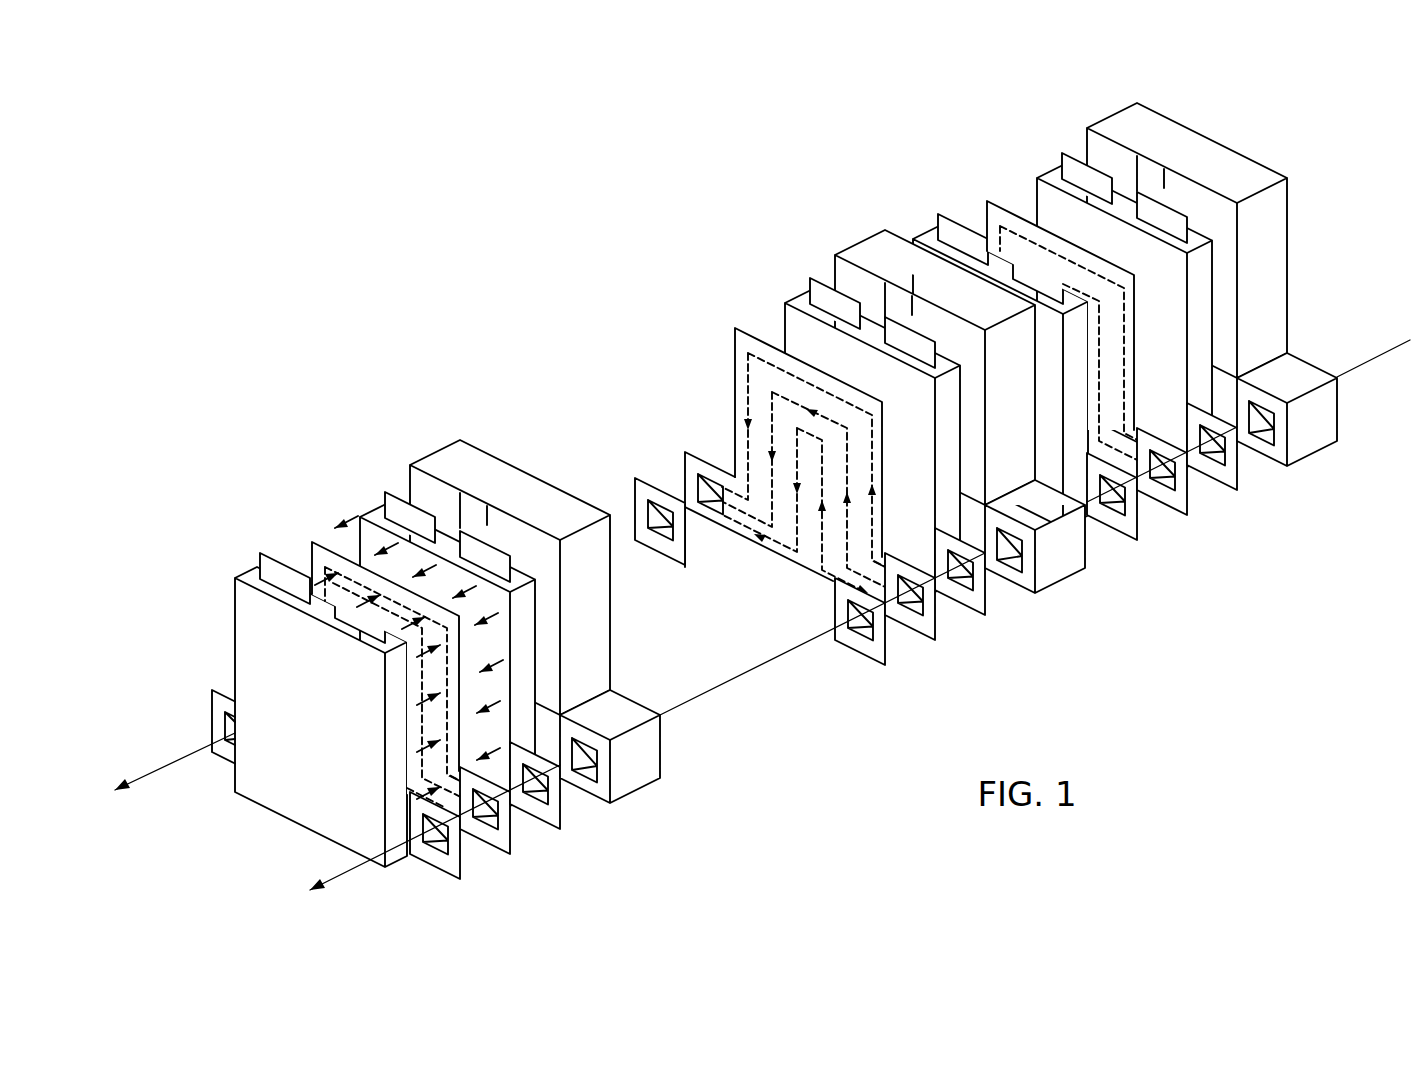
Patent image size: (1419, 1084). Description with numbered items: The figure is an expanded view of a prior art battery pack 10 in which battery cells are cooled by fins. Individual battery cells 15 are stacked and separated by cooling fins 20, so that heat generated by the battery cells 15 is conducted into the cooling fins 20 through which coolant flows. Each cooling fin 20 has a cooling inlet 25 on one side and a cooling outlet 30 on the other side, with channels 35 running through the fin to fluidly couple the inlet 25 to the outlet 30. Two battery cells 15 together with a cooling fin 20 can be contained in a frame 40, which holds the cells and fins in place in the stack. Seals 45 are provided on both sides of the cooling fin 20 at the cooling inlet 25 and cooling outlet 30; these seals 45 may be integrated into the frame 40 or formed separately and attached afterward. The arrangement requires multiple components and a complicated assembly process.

The battery pack 10 is at (595, 314).
The battery cell 15 is at (395, 772).
The cooling fin 20 is at (312, 542).
The cooling inlet 25 is at (913, 605).
The cooling outlet 30 is at (702, 492).
The channels 35 is at (745, 380).
The frame 40 is at (1318, 476).
The seals 45 is at (660, 485).